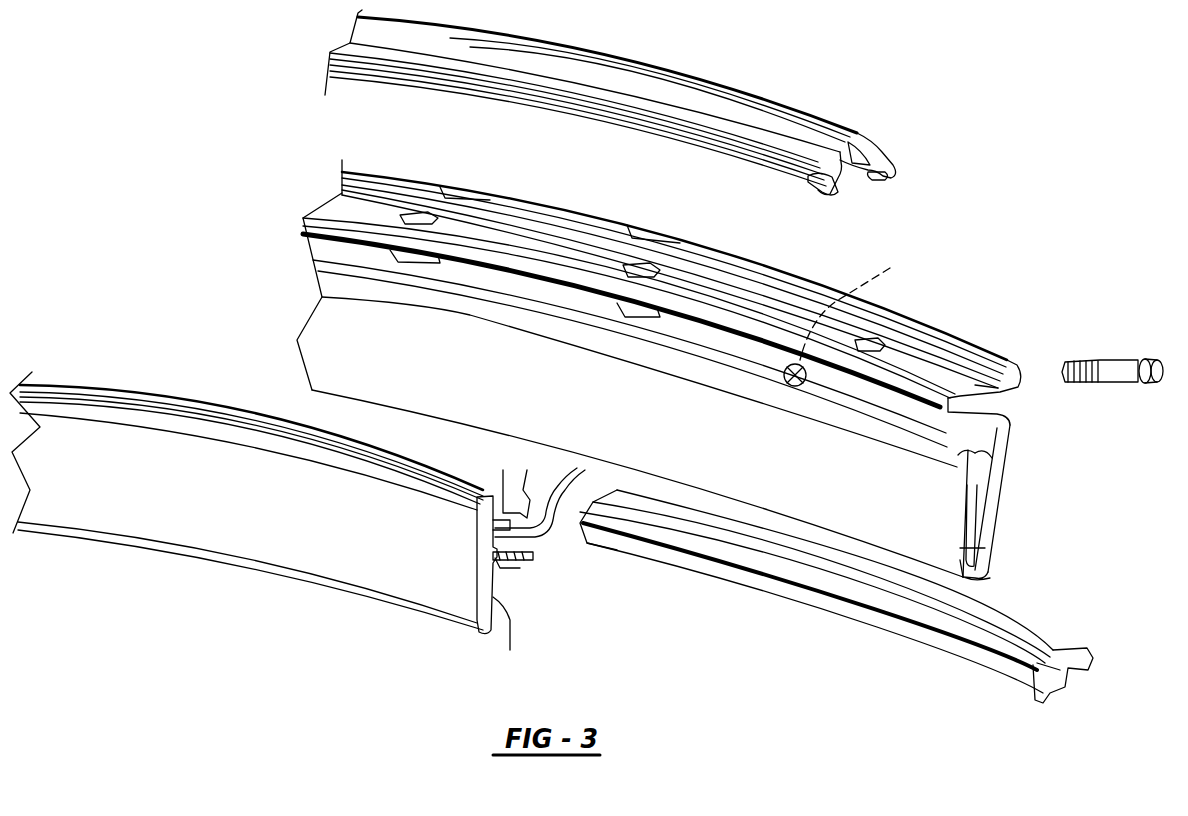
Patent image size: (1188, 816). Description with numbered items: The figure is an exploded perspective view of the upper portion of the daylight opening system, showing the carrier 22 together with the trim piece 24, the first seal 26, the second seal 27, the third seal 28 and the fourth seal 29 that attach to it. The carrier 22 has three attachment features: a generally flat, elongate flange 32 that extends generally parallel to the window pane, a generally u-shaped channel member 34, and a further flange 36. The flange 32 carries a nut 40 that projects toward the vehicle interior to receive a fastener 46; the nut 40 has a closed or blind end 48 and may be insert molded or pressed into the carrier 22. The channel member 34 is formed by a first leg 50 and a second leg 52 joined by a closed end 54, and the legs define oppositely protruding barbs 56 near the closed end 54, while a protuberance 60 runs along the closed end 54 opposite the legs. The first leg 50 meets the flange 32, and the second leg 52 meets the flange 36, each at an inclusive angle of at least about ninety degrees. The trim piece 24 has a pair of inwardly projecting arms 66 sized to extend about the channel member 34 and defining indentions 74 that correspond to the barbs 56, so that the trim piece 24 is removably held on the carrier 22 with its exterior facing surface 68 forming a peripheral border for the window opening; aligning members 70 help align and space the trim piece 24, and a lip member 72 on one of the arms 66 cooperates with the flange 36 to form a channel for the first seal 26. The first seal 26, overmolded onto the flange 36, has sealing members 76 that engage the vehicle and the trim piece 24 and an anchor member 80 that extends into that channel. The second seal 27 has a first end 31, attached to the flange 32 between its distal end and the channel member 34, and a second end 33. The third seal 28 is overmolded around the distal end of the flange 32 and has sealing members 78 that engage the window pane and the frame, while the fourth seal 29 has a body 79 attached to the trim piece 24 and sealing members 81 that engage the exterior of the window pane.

The carrier 22 is at (988, 344).
The trim piece 24 is at (376, 602).
The first seal 26 is at (694, 66).
The second seal 27 is at (988, 462).
The third seal 28 is at (984, 583).
The fourth seal 29 is at (1078, 643).
The first end 31 is at (1000, 455).
The flange 32 is at (992, 505).
The second end 33 is at (965, 472).
The channel member 34 is at (1004, 424).
The flange 36 is at (1022, 372).
The nut 40 is at (790, 403).
The fastener 46 is at (1158, 363).
The blind end 48 is at (858, 302).
The first leg 50 is at (968, 422).
The second leg 52 is at (963, 390).
The closed end 54 is at (937, 413).
The barbs 56 is at (648, 262).
The protuberance 60 is at (885, 397).
The arms 66 is at (505, 500).
The exterior facing surface 68 is at (368, 540).
The aligning members 70 is at (548, 525).
The lip member 72 is at (518, 480).
The indentions 74 is at (490, 556).
The sealing members 76 is at (848, 130).
The sealing members 78 is at (995, 552).
The body 79 is at (1040, 683).
The anchor member 80 is at (882, 180).
The sealing members 81 is at (1093, 662).